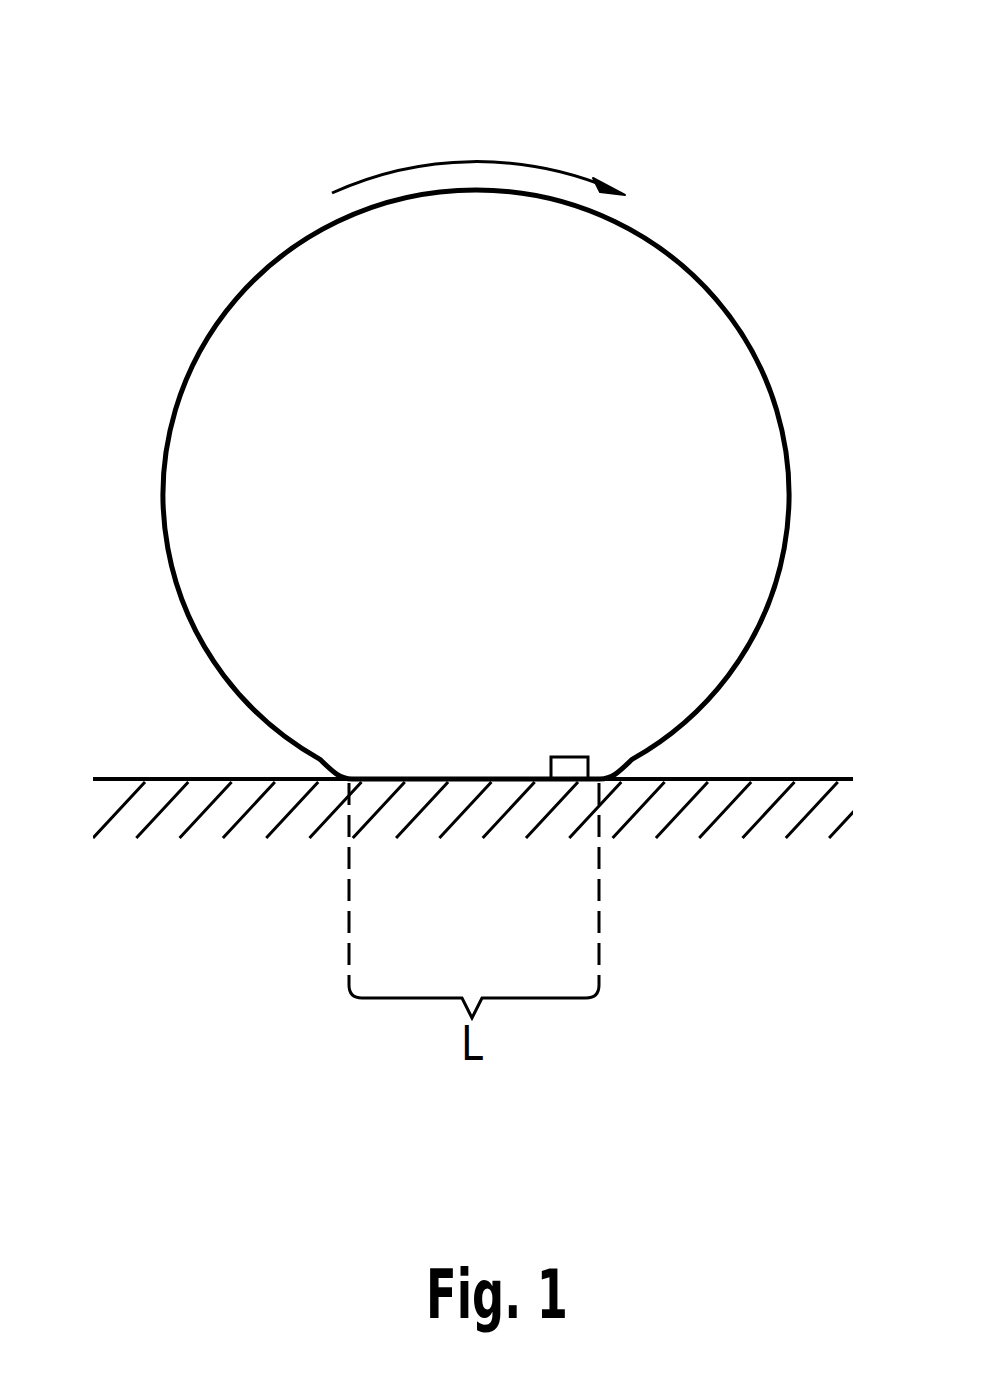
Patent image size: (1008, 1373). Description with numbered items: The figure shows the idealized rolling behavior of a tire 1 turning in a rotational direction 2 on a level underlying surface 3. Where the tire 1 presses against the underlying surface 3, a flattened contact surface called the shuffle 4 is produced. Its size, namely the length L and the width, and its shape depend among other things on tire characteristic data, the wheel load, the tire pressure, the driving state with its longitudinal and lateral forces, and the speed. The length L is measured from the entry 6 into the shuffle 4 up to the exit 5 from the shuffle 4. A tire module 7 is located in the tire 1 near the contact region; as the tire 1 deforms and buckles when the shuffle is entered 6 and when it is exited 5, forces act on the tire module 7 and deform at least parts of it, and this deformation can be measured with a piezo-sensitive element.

The tire 1 is at (690, 270).
The rotational direction 2 is at (400, 170).
The underlying surface 3 is at (165, 777).
The shuffle 4 is at (452, 783).
The exit from the shuffle 5 is at (342, 781).
The entry into the shuffle 6 is at (604, 781).
The tire module 7 is at (571, 757).